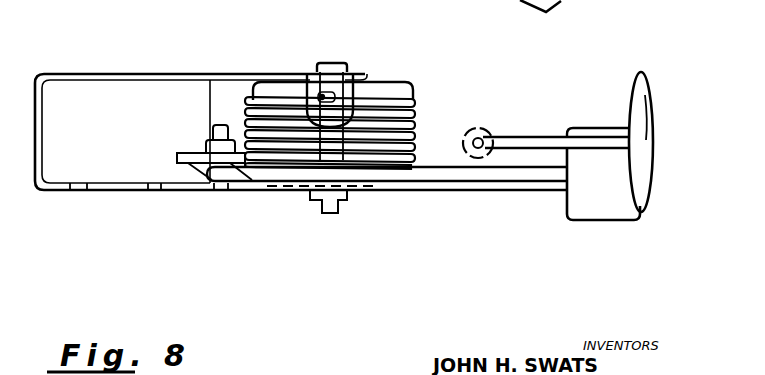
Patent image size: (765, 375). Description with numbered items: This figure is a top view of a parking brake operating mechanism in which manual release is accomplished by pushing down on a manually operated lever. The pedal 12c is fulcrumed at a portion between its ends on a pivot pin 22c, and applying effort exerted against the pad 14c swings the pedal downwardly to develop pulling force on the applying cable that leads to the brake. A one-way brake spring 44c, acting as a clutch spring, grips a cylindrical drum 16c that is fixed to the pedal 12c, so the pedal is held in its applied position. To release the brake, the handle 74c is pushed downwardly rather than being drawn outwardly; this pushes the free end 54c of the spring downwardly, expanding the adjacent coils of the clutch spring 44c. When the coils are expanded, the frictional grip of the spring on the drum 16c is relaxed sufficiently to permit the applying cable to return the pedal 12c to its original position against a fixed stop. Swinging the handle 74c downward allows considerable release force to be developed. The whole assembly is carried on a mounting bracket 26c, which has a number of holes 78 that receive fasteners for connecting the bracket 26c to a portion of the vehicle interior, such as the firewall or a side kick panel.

The mounting bracket 26c is at (155, 78).
The pivot pin 22c is at (335, 67).
The cylindrical drum 16c is at (388, 88).
The one-way brake spring 44c is at (413, 120).
The free end of the spring 54c is at (444, 154).
The handle 74c is at (643, 95).
The pedal 12c is at (482, 178).
The pad 14c is at (592, 207).
The holes 78 is at (222, 192).